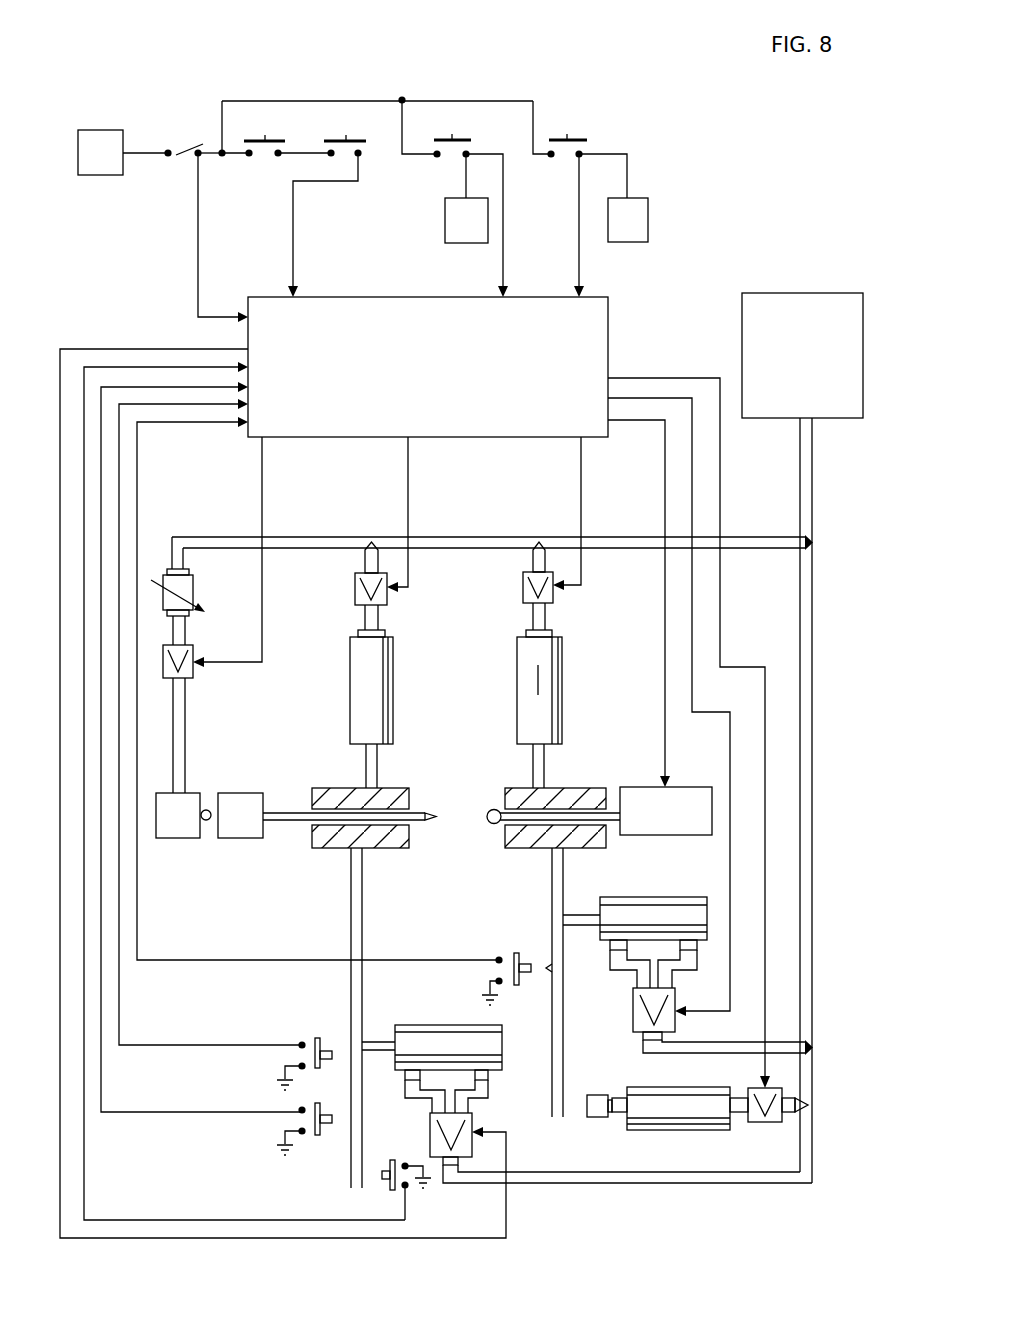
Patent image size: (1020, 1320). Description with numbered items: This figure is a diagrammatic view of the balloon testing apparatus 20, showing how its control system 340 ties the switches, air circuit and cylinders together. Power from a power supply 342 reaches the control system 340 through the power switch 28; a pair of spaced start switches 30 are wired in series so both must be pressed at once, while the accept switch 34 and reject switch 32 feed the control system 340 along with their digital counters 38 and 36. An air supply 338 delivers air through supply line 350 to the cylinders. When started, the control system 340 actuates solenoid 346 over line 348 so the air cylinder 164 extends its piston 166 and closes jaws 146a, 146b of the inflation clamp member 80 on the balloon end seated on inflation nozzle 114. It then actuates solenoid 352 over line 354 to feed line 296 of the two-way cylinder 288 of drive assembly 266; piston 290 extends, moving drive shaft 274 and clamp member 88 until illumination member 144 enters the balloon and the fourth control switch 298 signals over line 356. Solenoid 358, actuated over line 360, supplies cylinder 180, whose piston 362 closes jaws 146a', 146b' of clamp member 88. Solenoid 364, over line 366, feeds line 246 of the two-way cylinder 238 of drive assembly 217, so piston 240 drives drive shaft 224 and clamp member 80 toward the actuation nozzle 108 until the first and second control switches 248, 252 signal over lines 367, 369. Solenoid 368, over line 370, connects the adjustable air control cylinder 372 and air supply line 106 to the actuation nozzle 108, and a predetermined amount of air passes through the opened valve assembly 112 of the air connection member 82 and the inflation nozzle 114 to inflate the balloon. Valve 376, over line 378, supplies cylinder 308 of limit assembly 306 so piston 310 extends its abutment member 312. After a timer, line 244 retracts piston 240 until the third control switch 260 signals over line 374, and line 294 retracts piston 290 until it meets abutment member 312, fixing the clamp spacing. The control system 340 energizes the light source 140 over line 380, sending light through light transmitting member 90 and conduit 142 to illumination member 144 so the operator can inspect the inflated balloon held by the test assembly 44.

The balloon testing apparatus 20 is at (614, 302).
The power switch 28 is at (181, 148).
The start switches 30 is at (266, 136).
The reject switch 32 is at (566, 136).
The accept switch 34 is at (452, 134).
The digital counter 36 is at (648, 212).
The digital counter 38 is at (445, 229).
The test assembly 44 is at (572, 713).
The inflation clamp member 80 is at (395, 709).
The air connection member 82 is at (290, 840).
The illumination clamp member 88 is at (565, 777).
The light transmitting member 90 is at (612, 832).
The air supply line 106 is at (185, 742).
The actuating nozzle 108 is at (205, 810).
The valve assembly 112 is at (243, 793).
The inflation nozzle 114 is at (420, 812).
The light source 140 is at (672, 788).
The light transmitting conduit 142 is at (612, 812).
The illumination member 144 is at (488, 826).
The upper jaw 146a is at (392, 786).
The lower jaw 146b is at (395, 851).
The jaw 146a' is at (579, 780).
The jaw 146b' is at (577, 855).
The air cylinder 164 is at (393, 668).
The piston 166 is at (378, 771).
The cylinder 180 is at (562, 646).
The drive assembly 217 is at (440, 1018).
The drive shaft 224 is at (364, 905).
The cylinder 238 is at (470, 1056).
The piston 240 is at (368, 1042).
The air supply line 244 is at (407, 1085).
The air supply line 246 is at (490, 1095).
The first control switch 248 is at (316, 1040).
The second control switch 252 is at (316, 1136).
The third control switch 260 is at (388, 1192).
The drive assembly 266 is at (643, 929).
The drive shaft 274 is at (552, 892).
The cylinder 288 is at (619, 899).
The piston 290 is at (581, 927).
The air supply line 294 is at (612, 968).
The air supply line 296 is at (690, 968).
The fourth control switch 298 is at (517, 955).
The limit assembly 306 is at (653, 1111).
The cylinder 308 is at (690, 1118).
The piston 310 is at (613, 1100).
The abutment member 312 is at (600, 1095).
The air supply 338 is at (782, 293).
The control system 340 is at (598, 340).
The power supply 342 is at (94, 131).
The switch or solenoid 346 is at (355, 592).
The line 348 is at (410, 569).
The supply line 350 is at (812, 455).
The solenoid or switch 352 is at (633, 1018).
The line 354 is at (701, 1012).
The line 356 is at (404, 960).
The switch or solenoid 358 is at (523, 593).
The line 360 is at (582, 563).
The piston 362 is at (544, 758).
The switch or solenoid 364 is at (470, 1122).
The line 366 is at (507, 1218).
The line 367 is at (270, 1045).
The switch or solenoid 368 is at (193, 651).
The line 369 is at (162, 1112).
The line 370 is at (266, 606).
The adjustable air control cylinder 372 is at (195, 595).
The line 374 is at (179, 1220).
The valve or solenoid 376 is at (757, 1122).
The line 378 is at (766, 1012).
The control line 380 is at (668, 740).